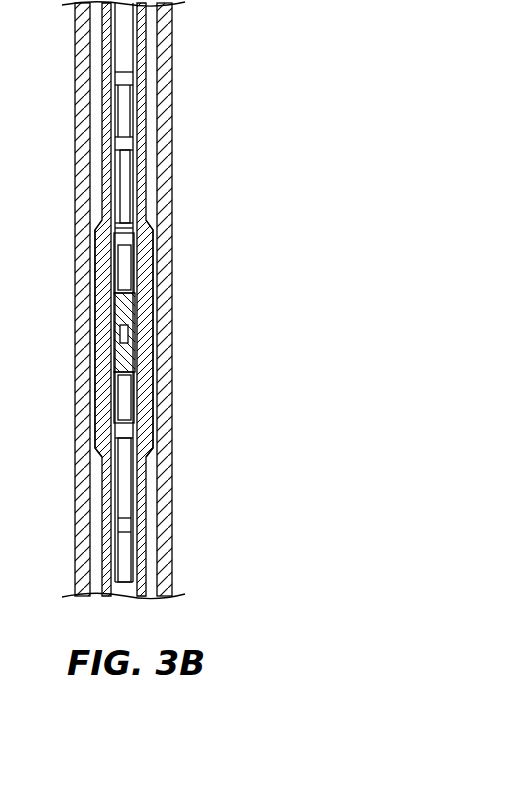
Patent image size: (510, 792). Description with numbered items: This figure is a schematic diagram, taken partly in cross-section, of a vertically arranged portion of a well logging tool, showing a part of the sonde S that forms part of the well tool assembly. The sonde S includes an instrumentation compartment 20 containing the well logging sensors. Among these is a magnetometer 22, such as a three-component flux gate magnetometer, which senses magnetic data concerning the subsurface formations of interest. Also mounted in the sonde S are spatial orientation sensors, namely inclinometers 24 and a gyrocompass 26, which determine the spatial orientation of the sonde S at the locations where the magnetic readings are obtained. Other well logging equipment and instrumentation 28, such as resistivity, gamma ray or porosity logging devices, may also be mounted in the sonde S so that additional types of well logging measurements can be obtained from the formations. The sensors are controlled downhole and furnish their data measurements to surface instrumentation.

The instrumentation compartment 20 is at (158, 64).
The magnetometer 22 is at (125, 108).
The inclinometers 24 is at (128, 185).
The gyrocompass 26 is at (128, 395).
The well logging instrumentation 28 is at (147, 466).
The sonde S is at (92, 463).